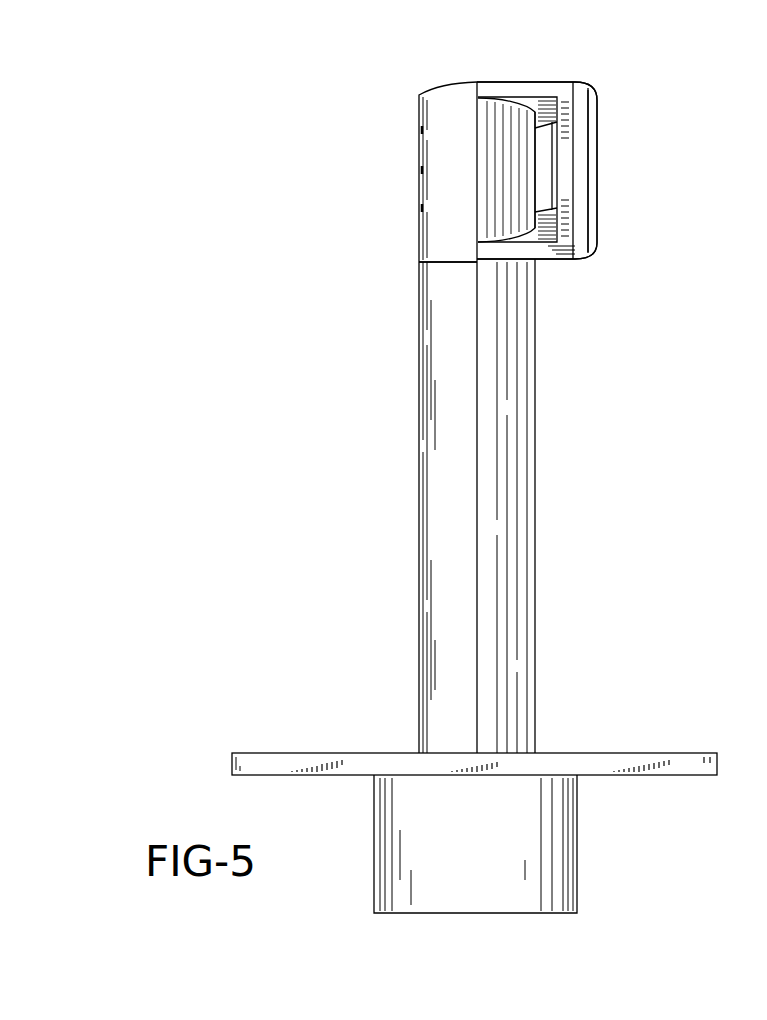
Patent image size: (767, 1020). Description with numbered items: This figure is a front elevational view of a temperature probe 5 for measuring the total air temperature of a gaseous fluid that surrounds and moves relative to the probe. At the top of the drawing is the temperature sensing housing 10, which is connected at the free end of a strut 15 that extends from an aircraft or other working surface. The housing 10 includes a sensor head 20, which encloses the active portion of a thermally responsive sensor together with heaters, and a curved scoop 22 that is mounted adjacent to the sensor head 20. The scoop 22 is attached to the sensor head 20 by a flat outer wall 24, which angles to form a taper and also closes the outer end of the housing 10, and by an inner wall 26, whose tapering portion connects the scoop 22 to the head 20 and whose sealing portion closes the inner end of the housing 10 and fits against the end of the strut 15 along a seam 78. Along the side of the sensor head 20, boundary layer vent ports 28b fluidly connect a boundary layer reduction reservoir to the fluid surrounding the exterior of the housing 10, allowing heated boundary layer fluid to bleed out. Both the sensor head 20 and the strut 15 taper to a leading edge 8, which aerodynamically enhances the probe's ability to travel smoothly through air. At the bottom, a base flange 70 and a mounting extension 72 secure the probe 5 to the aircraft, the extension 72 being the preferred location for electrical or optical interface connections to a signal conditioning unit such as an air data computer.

The temperature probe 5 is at (300, 354).
The temperature sensing housing 10 is at (595, 275).
The outer wall 24 is at (513, 80).
The curved scoop 22 is at (588, 163).
The sensor head 20 is at (420, 241).
The boundary layer vent ports 28b is at (421, 130).
The seam 78 is at (451, 264).
The inner wall 26 is at (562, 275).
The strut 15 is at (415, 529).
The leading edge 8 is at (477, 588).
The base flange 70 is at (673, 752).
The mounting extension 72 is at (563, 846).